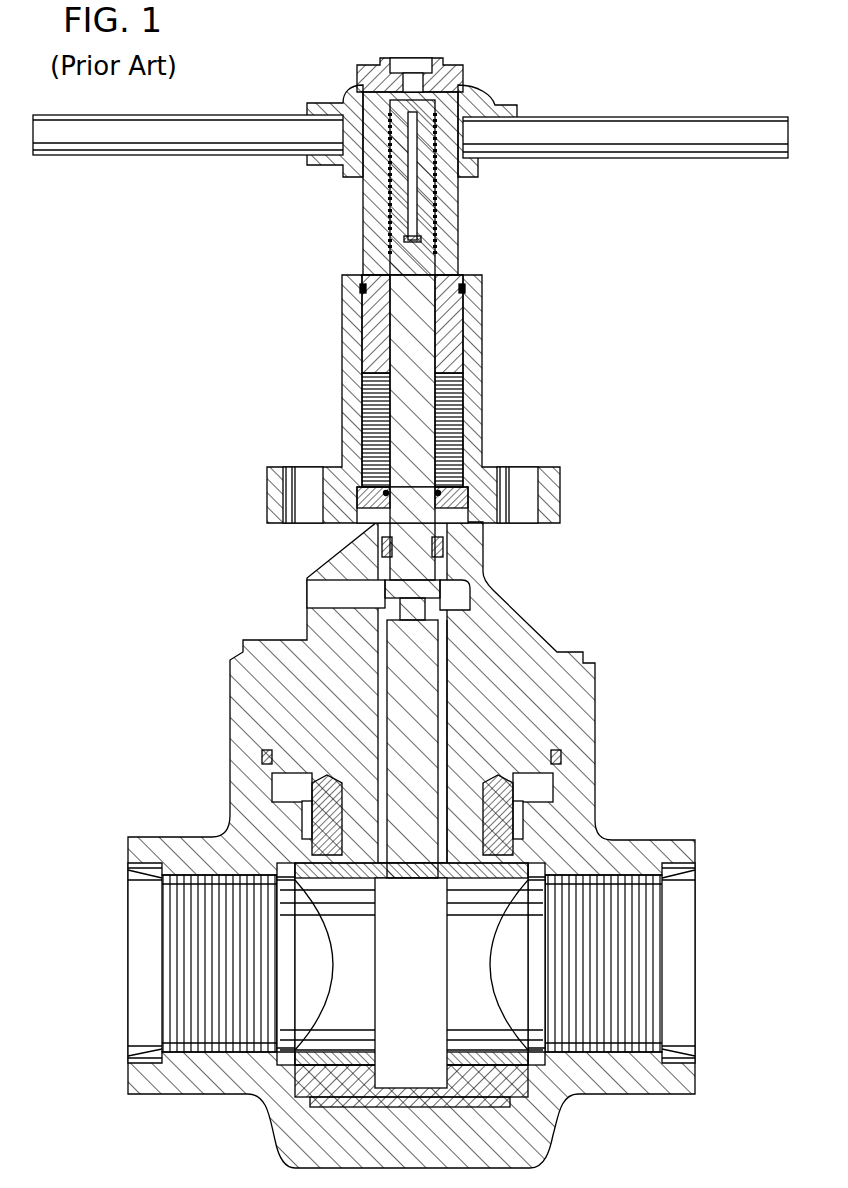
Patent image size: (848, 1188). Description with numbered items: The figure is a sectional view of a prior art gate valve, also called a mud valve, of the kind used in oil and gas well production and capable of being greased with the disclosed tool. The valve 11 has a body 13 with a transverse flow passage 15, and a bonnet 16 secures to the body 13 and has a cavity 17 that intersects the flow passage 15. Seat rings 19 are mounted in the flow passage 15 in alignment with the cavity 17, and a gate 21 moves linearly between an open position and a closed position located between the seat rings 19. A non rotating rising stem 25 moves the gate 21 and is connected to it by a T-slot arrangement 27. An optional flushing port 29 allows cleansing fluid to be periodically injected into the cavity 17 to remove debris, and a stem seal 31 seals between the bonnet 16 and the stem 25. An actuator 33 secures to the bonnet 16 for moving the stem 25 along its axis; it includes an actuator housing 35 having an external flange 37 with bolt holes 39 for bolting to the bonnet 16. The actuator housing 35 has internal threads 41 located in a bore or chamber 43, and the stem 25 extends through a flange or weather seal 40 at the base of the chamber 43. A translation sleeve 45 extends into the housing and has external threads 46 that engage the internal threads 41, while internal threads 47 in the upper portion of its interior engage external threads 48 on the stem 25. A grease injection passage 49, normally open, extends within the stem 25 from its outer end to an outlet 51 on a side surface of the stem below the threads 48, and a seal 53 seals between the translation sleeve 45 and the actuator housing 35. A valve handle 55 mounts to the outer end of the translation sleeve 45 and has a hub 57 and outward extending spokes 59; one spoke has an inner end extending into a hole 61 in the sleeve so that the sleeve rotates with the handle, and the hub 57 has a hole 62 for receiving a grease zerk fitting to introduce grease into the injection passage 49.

The valve 11 is at (410, 596).
The body 13 is at (613, 850).
The flow passage 15 is at (627, 882).
The bonnet 16 is at (250, 710).
The cavity 17 is at (440, 665).
The seat rings 19 is at (350, 873).
The gate 21 is at (420, 717).
The stem 25 is at (458, 489).
The T-slot arrangement 27 is at (432, 590).
The flushing port 29 is at (317, 598).
The stem seal 31 is at (377, 530).
The actuator 33 is at (373, 388).
The actuator housing 35 is at (373, 399).
The external flange 37 is at (265, 490).
The bolt holes 39 is at (303, 477).
The weather seal 40 is at (455, 527).
The internal threads 41 is at (460, 406).
The chamber 43 is at (460, 434).
The translation sleeve 45 is at (462, 200).
The external threads 46 is at (458, 356).
The internal threads 47 is at (400, 232).
The external threads 48 is at (390, 222).
The grease injection passage 49 is at (408, 220).
The outlet 51 is at (423, 240).
The seal 53 is at (465, 290).
The valve handle 55 is at (410, 101).
The hub 57 is at (467, 74).
The spokes 59 is at (695, 128).
The hole 61 is at (450, 128).
The hole 62 is at (420, 68).